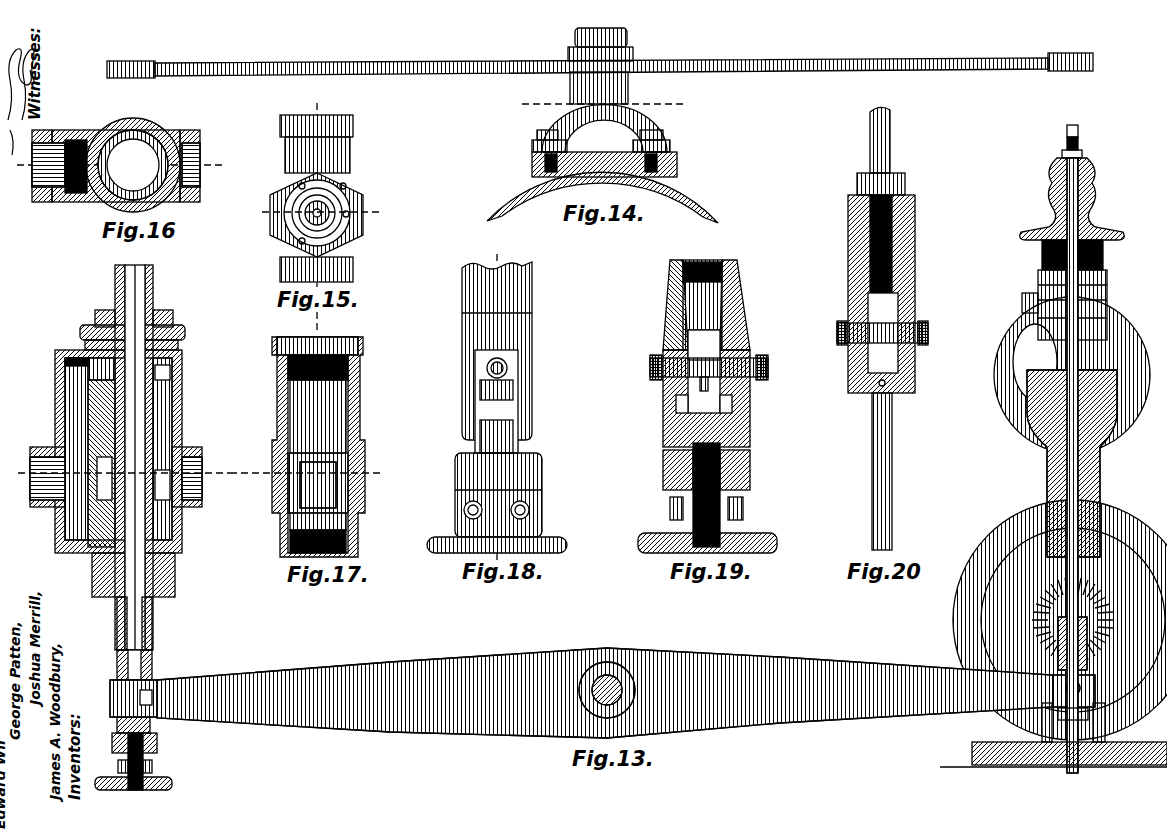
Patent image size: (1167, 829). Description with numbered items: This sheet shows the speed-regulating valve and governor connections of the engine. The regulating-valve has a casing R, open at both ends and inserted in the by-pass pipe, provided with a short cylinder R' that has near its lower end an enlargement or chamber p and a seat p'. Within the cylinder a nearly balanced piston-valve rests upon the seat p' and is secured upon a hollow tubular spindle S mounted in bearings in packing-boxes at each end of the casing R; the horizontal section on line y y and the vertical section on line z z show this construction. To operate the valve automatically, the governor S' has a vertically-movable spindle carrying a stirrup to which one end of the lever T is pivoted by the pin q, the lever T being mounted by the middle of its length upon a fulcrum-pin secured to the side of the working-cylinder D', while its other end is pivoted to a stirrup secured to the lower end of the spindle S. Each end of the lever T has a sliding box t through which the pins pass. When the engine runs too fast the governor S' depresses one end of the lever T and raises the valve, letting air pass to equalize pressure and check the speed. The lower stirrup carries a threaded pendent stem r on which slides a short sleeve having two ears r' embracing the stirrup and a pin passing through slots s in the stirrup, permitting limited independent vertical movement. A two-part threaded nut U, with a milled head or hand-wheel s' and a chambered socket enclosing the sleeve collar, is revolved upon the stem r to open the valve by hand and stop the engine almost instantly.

In FIG. 16, the casing R is at (116, 160).
In FIG. 15, the casing R is at (318, 199).
In FIG. 17, the casing R is at (311, 447).
In FIG. 13, the casing R is at (107, 451).
In FIG. 15, the short cylinder R' is at (317, 210).
In FIG. 17, the short cylinder R' is at (318, 416).
In FIG. 16, the enlargement or chamber p is at (133, 165).
In FIG. 17, the enlargement or chamber p is at (318, 491).
In FIG. 13, the enlargement or chamber p is at (75, 452).
In FIG. 16, the seat p' is at (133, 165).
In FIG. 17, the seat p' is at (324, 485).
In FIG. 13, the seat p' is at (148, 492).
In FIG. 15, the spindle S is at (317, 213).
In FIG. 18, the spindle S is at (497, 351).
In FIG. 19, the spindle S is at (710, 305).
In FIG. 13, the spindle S is at (134, 457).
In FIG. 13, the governor S' is at (1072, 427).
In FIG. 19, the slots s is at (711, 386).
In FIG. 18, the milled head or hand-wheel s' is at (506, 546).
In FIG. 19, the milled head or hand-wheel s' is at (716, 543).
In FIG. 13, the milled head or hand-wheel s' is at (142, 788).
In FIG. 19, the threaded pendent stem r is at (725, 495).
In FIG. 13, the threaded pendent stem r is at (141, 753).
In FIG. 18, the ears r' is at (496, 400).
In FIG. 19, the ears r' is at (707, 406).
In FIG. 18, the threaded nut U is at (498, 495).
In FIG. 19, the threaded nut U is at (717, 504).
In FIG. 13, the threaded nut U is at (145, 765).
In FIG. 14, the lever T is at (600, 66).
In FIG. 13, the lever T is at (602, 693).
In FIG. 13, the sliding box t is at (1064, 689).
In FIG. 20, the pin q is at (882, 341).
In FIG. 14, the working-cylinder D' is at (602, 164).
In FIG. 17, the section line y is at (313, 473).
In FIG. 13, the section line y is at (116, 473).
In FIG. 15, the section line z is at (319, 213).